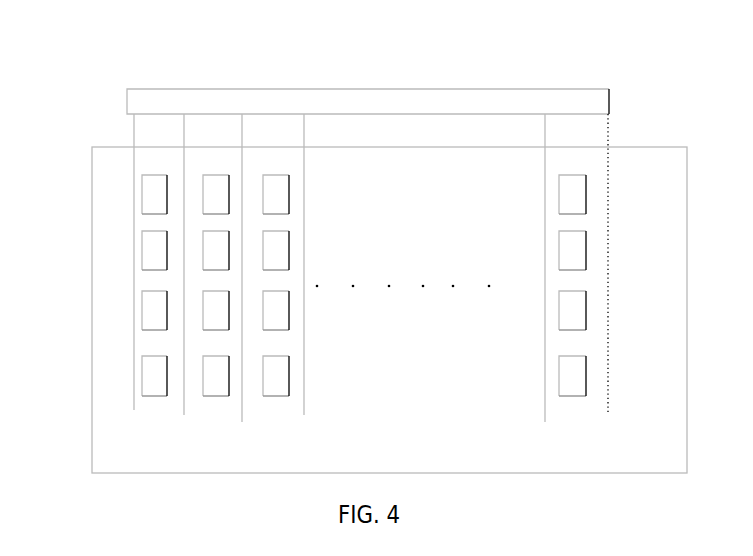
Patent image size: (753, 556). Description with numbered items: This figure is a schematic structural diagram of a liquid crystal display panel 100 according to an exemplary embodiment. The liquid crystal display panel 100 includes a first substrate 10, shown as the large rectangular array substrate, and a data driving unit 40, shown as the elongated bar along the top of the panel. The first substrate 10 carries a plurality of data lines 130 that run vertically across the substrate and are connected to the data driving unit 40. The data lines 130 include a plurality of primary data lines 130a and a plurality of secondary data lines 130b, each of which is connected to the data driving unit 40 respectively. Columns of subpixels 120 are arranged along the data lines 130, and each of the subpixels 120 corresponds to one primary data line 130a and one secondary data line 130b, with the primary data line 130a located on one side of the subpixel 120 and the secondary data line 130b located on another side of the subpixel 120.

The liquid crystal display panel 100 is at (200, 39).
The data driving unit 40 is at (377, 97).
The first substrate 10 is at (96, 218).
The subpixel 120 is at (143, 252).
The data lines 130 is at (413, 246).
The primary data line 130a is at (545, 132).
The secondary data line 130b is at (608, 140).